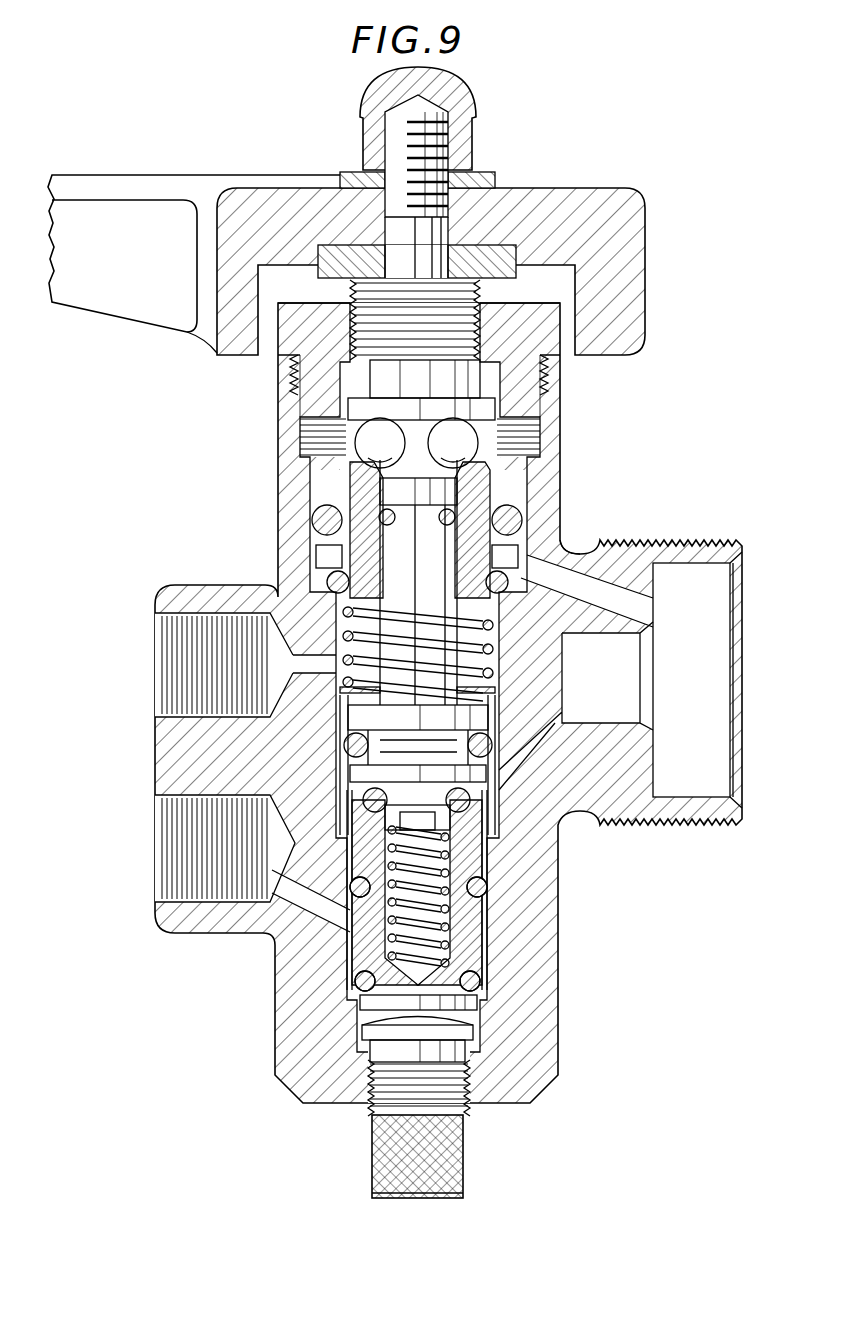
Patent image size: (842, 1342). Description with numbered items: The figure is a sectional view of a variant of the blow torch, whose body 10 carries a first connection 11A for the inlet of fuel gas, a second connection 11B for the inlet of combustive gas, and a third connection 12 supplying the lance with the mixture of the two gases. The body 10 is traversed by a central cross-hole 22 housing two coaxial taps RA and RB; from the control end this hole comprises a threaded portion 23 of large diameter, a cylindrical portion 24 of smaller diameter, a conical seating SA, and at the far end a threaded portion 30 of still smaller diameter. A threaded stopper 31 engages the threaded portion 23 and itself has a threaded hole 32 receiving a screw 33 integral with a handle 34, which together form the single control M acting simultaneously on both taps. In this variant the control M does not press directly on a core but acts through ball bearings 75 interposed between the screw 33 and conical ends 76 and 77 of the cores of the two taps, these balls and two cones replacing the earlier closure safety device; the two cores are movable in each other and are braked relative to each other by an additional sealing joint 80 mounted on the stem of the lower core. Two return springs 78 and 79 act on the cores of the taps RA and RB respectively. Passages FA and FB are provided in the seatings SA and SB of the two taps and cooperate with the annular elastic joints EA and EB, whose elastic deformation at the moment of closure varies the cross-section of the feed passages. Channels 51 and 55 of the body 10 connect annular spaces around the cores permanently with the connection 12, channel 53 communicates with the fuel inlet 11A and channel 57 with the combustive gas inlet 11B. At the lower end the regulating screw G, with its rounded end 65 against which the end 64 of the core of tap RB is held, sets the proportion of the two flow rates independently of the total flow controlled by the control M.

The body 10 is at (275, 1022).
The first connection 11A is at (172, 625).
The second connection 11B is at (165, 815).
The third connection 12 is at (690, 540).
The central cross-hole 22 is at (345, 718).
The threaded portion 23 is at (297, 372).
The cylindrical portion 24 is at (305, 470).
The threaded portion 30 is at (375, 1105).
The threaded stopper 31 is at (560, 320).
The threaded hole 32 is at (480, 292).
The screw 33 is at (352, 292).
The handle 34 is at (165, 173).
The single common control M is at (292, 173).
The channel 51 is at (600, 578).
The channel 53 is at (312, 655).
The channel 55 is at (565, 723).
The channel 57 is at (290, 928).
The end of the core 64 is at (478, 1005).
The rounded end 65 is at (365, 1022).
The ball bearings 75 is at (463, 453).
The conical end 76 is at (372, 478).
The conical end 77 is at (426, 472).
The return spring 78 is at (490, 630).
The return spring 79 is at (455, 938).
The additional sealing joint 80 is at (457, 533).
The first tap RA is at (312, 528).
The elastic joint EA is at (316, 556).
The feed passage FA is at (328, 582).
The conical seating SA is at (565, 548).
The elastic joint EB is at (365, 795).
The seating SB is at (390, 815).
The feed passage FB is at (482, 830).
The second tap RB is at (360, 878).
The regulating screw G is at (463, 1170).